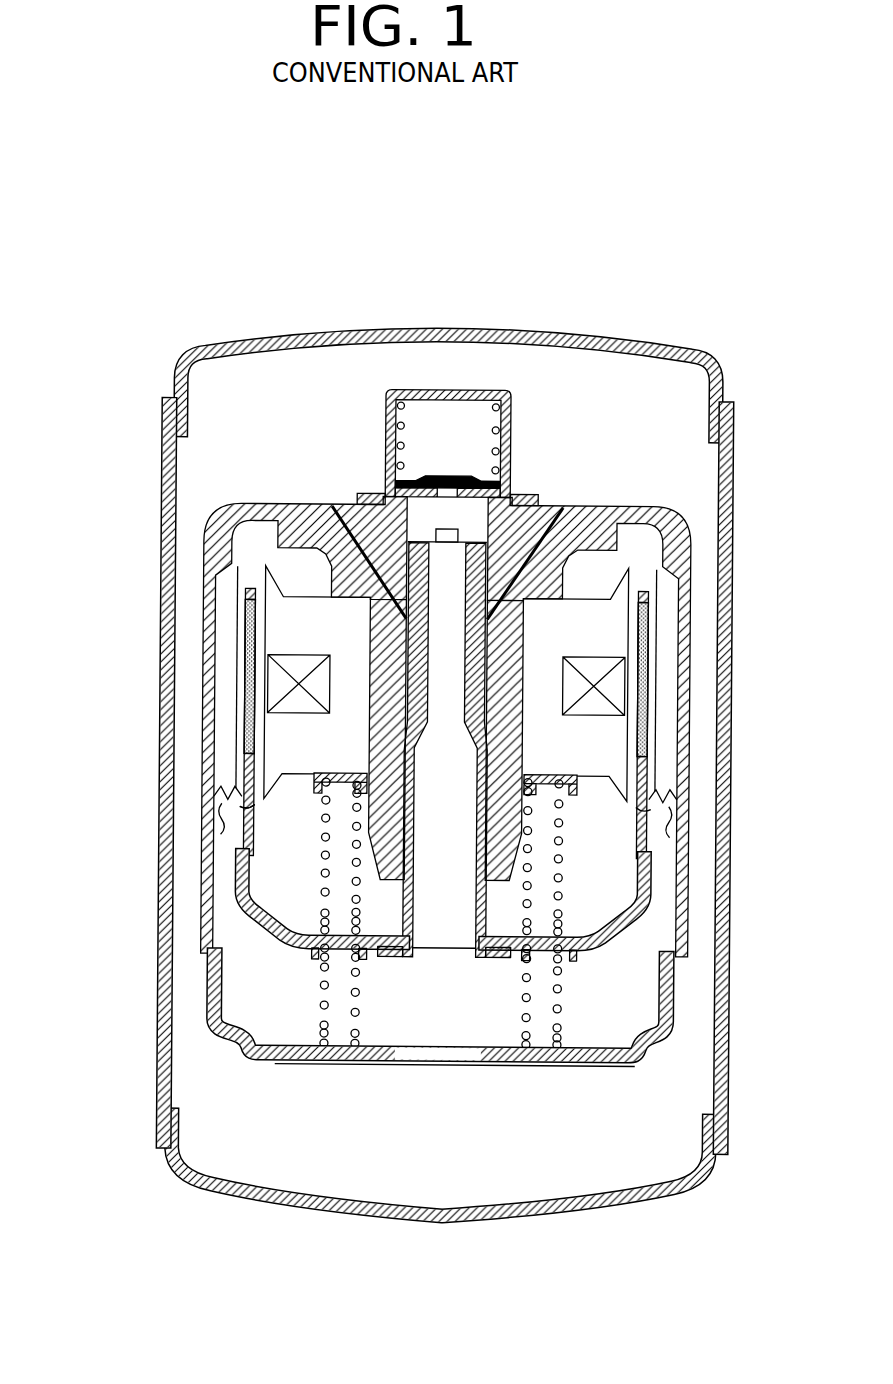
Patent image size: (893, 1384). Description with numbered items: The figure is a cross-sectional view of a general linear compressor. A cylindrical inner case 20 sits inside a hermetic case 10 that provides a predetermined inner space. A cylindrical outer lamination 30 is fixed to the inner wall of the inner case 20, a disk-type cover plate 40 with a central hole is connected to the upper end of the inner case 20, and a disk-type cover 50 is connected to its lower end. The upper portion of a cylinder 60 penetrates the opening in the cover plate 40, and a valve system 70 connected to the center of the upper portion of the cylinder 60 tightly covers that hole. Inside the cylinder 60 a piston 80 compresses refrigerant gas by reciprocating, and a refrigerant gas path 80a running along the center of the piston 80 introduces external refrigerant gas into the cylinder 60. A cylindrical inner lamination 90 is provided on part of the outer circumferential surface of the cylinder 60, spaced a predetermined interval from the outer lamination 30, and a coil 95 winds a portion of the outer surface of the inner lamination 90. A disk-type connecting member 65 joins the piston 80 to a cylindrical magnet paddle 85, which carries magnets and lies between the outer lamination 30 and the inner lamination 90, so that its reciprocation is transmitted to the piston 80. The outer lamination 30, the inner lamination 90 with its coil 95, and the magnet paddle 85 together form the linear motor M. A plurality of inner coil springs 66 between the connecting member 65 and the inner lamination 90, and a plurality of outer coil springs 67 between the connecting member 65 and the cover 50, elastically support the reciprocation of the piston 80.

The hermetic case 10 is at (173, 490).
The inner case 20 is at (205, 698).
The outer lamination 30 is at (213, 757).
The cover plate 40 is at (293, 502).
The cover 50 is at (275, 1062).
The cylinder 60 is at (512, 814).
The connecting member 65 is at (273, 913).
The inner coil springs 66 is at (325, 878).
The outer coil springs 67 is at (325, 1007).
The valve system 70 is at (383, 443).
The piston 80 is at (493, 884).
The refrigerant gas path 80a is at (447, 927).
The magnet paddle 85 is at (252, 600).
The inner lamination 90 is at (262, 779).
The coil 95 is at (268, 668).
The linear motor M is at (235, 823).